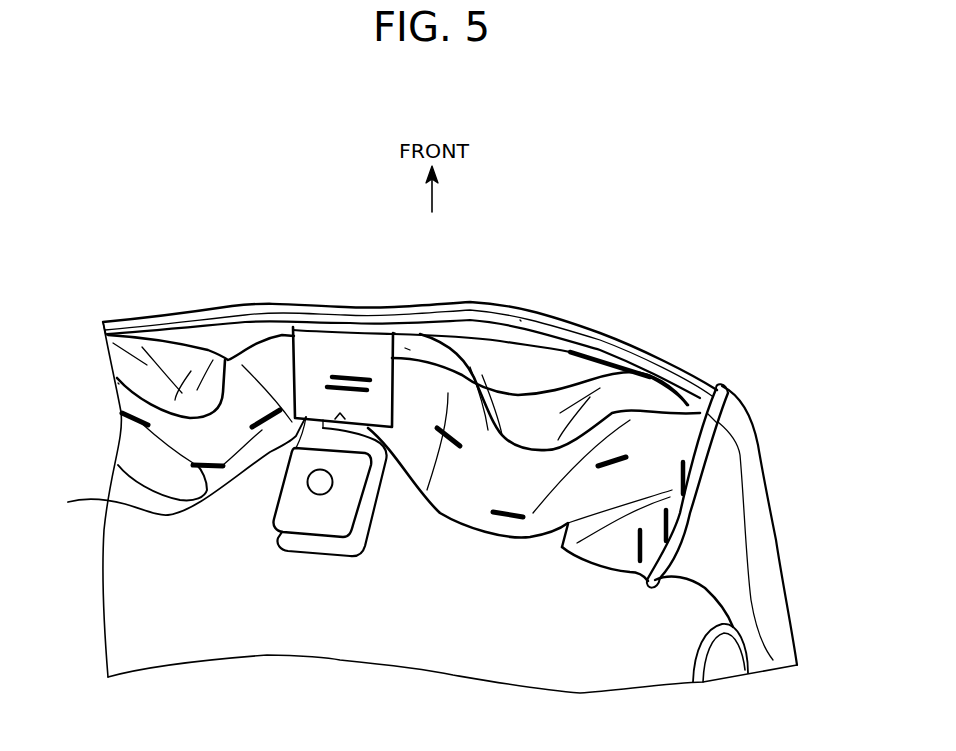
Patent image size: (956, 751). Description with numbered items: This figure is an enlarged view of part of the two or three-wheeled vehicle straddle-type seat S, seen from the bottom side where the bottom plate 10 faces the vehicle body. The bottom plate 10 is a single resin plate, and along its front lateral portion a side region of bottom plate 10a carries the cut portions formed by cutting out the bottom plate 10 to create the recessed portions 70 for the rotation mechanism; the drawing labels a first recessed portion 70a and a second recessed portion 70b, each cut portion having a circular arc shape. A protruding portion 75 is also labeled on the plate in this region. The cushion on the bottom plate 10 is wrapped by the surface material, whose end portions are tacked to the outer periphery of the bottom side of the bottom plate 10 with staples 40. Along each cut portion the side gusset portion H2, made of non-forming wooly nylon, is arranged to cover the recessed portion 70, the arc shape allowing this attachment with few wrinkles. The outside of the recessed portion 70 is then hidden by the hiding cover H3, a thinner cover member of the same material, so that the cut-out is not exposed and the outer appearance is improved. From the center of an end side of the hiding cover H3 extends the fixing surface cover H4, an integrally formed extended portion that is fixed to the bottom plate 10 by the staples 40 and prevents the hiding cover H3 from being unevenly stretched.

The two or three-wheeled vehicle straddle-type seat S is at (134, 190).
The bottom plate 10 is at (514, 652).
The side region of bottom plate 10a is at (685, 404).
The recessed portion 70 is at (410, 322).
The first recessed portion 70a is at (507, 369).
The second recessed portion 70b is at (212, 354).
The protruding portion 75 is at (408, 348).
The staple 40 is at (122, 416).
The side gusset portion H2 is at (186, 432).
The hiding cover H3 is at (388, 318).
The fixing surface cover H4 is at (323, 360).